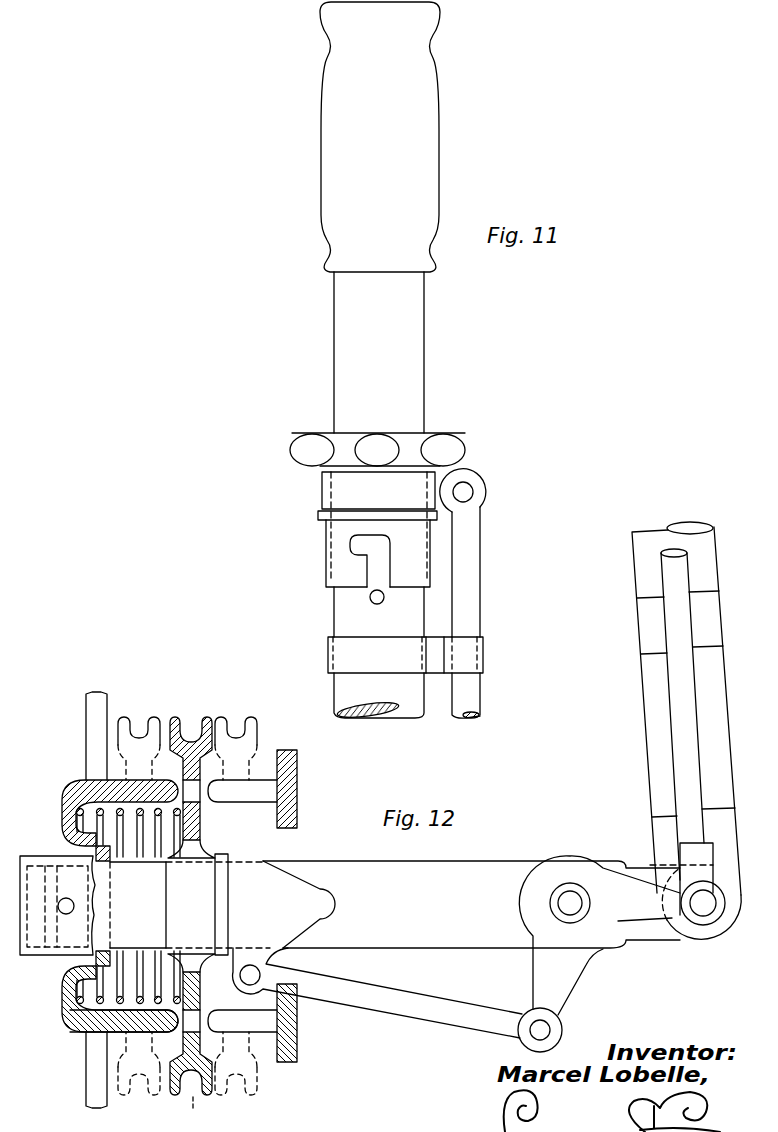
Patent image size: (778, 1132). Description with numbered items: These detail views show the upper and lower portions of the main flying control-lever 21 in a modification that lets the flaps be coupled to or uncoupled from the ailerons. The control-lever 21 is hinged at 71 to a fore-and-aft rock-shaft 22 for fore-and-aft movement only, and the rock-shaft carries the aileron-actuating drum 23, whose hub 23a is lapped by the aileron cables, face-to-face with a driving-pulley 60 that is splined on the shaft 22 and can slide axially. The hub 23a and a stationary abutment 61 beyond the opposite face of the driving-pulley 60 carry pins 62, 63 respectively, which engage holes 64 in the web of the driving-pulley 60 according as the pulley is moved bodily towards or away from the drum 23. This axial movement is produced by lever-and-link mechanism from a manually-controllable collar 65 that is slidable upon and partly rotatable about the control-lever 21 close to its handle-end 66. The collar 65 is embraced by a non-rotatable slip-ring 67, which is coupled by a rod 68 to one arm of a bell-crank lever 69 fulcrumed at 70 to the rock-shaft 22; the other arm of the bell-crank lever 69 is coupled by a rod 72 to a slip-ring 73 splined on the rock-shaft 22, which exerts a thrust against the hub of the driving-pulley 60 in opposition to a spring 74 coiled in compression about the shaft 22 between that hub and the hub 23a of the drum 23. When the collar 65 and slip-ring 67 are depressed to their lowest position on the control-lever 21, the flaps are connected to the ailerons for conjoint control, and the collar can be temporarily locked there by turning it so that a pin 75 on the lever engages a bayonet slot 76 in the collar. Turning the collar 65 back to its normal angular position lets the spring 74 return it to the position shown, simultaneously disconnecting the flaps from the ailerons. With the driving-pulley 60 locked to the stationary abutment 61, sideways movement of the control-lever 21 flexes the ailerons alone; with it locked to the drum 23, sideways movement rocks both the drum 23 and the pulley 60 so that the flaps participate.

In FIG. 11, the control-lever 21 is at (412, 342).
In FIG. 12, the control-lever 21 is at (703, 550).
In FIG. 12, the rock-shaft 22 is at (373, 880).
In FIG. 12, the drum 23 is at (88, 738).
In FIG. 12, the hub of the drum 23a is at (64, 1007).
In FIG. 12, the driving-pulley 60 is at (191, 919).
In FIG. 12, the stationary abutment 61 is at (290, 1040).
In FIG. 12, the pin 62 is at (107, 1032).
In FIG. 12, the pin 63 is at (187, 918).
In FIG. 12, the holes 64 is at (183, 1032).
In FIG. 11, the collar 65 is at (315, 442).
In FIG. 11, the handle-end 66 is at (380, 137).
In FIG. 11, the slip-ring 67 is at (321, 490).
In FIG. 11, the rod 68 is at (465, 688).
In FIG. 12, the rod 68 is at (673, 580).
In FIG. 12, the bell-crank lever 69 is at (557, 982).
In FIG. 12, the fulcrum 70 is at (567, 898).
In FIG. 12, the hinge 71 is at (706, 912).
In FIG. 12, the rod 72 is at (391, 1001).
In FIG. 12, the slip-ring 73 is at (300, 897).
In FIG. 12, the spring 74 is at (120, 811).
In FIG. 11, the pin 75 is at (370, 597).
In FIG. 11, the bayonet slot 76 is at (355, 545).